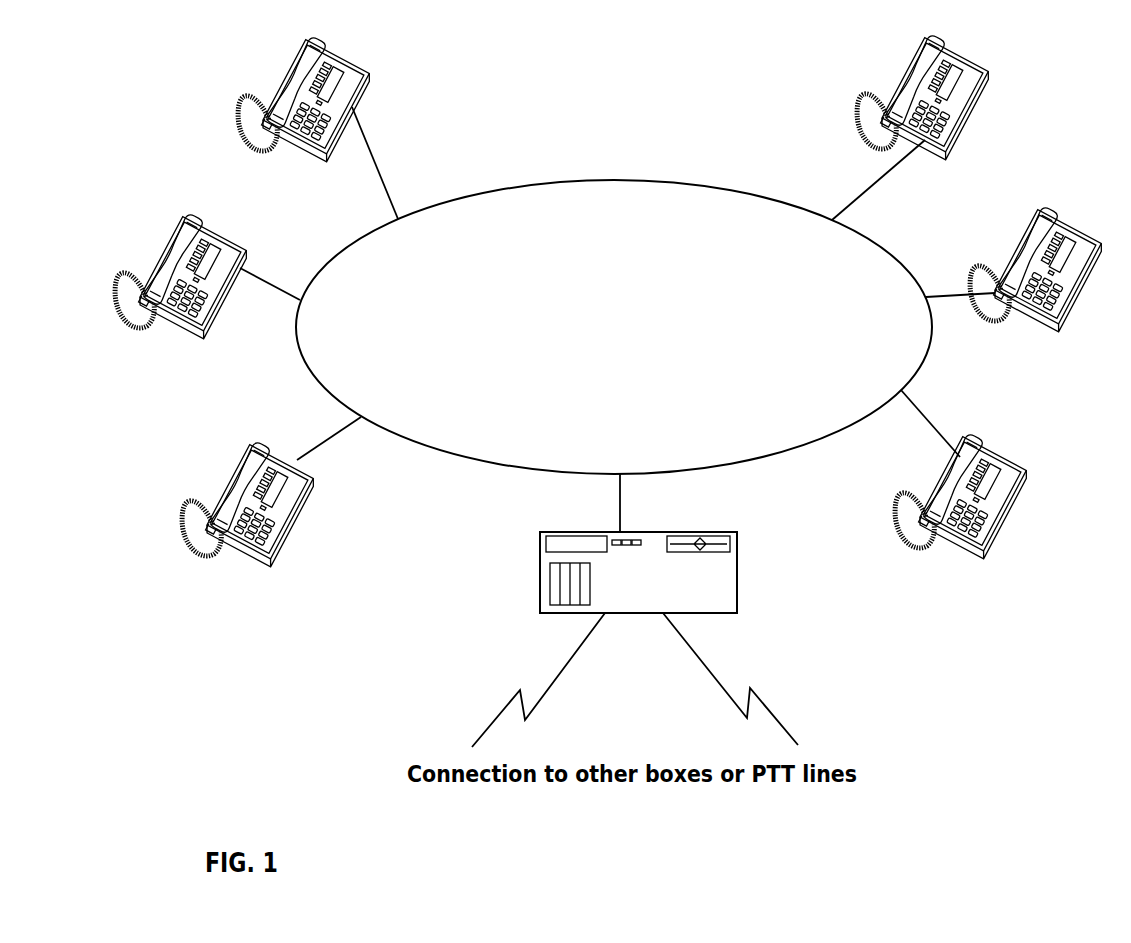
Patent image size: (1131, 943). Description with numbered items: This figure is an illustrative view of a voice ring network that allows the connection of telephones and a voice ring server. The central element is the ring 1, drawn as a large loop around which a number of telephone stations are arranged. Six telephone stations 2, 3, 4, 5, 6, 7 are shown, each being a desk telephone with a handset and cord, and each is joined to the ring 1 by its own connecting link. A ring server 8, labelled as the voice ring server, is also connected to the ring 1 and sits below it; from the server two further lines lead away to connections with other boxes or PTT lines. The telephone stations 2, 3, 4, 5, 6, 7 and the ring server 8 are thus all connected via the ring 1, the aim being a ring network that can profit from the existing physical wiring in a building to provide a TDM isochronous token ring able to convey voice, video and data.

The ring 1 is at (435, 453).
The telephone station 2 is at (968, 545).
The telephone station 3 is at (1037, 317).
The telephone station 4 is at (933, 142).
The telephone station 5 is at (302, 143).
The telephone station 6 is at (172, 313).
The telephone station 7 is at (252, 547).
The ring server 8 is at (733, 587).